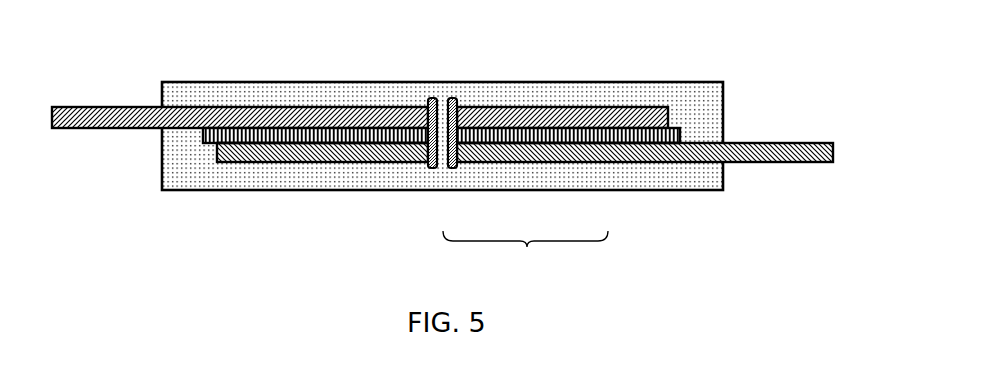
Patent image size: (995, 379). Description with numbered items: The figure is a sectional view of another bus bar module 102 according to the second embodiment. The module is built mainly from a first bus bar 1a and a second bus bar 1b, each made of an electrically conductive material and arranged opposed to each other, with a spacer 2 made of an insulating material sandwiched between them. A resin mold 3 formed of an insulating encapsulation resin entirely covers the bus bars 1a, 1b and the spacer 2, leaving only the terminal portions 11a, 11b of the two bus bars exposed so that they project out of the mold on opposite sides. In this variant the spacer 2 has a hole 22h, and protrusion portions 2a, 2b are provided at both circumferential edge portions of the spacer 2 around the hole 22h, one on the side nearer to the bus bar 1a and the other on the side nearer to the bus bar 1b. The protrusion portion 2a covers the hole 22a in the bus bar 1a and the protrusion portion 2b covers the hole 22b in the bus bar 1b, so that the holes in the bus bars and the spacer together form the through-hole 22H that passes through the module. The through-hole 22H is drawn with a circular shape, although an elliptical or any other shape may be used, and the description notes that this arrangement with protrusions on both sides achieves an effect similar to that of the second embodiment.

The bus bar module 102 is at (449, 148).
The resin mold 3 is at (442, 115).
The bus bar 1b is at (358, 85).
The terminal portion 11b is at (238, 91).
The bus bar 1a is at (533, 190).
The terminal portion 11a is at (653, 179).
The spacer 2 is at (490, 121).
The protrusion portion 2a is at (420, 140).
The protrusion portion 2b is at (410, 105).
The hole 22h is at (466, 182).
The hole 22a is at (383, 190).
The hole 22b is at (568, 190).
The through-hole 22H is at (525, 256).